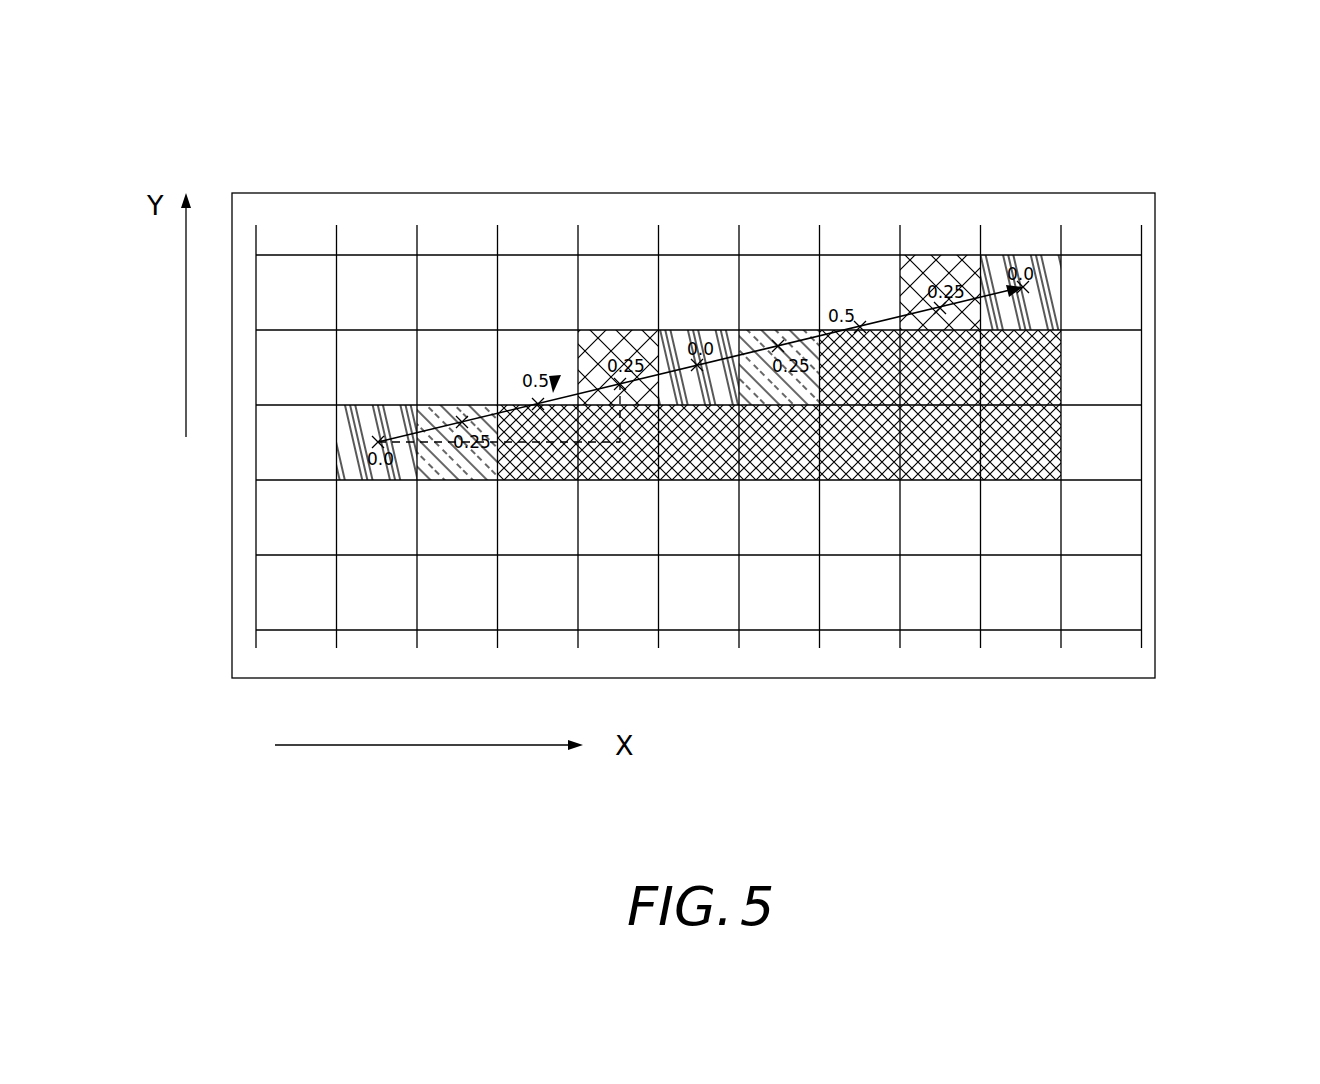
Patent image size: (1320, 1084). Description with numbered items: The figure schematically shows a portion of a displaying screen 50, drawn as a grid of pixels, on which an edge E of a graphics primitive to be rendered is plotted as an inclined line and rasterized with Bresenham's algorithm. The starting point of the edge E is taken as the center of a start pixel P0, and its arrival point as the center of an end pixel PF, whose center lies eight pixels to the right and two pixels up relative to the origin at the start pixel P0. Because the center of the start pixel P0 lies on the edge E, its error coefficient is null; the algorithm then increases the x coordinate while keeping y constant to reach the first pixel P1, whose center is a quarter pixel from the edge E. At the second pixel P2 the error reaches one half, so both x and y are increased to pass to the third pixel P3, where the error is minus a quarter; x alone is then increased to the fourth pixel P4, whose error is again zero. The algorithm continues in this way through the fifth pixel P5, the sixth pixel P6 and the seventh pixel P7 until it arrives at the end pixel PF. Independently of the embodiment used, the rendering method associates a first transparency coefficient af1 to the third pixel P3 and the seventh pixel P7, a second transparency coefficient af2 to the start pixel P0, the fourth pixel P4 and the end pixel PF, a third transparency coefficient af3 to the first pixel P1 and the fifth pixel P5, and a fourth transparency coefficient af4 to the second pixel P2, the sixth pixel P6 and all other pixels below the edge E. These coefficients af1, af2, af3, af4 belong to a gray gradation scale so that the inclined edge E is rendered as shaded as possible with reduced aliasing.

The displaying screen 50 is at (285, 604).
The start pixel P0 is at (355, 421).
The first pixel P1 is at (437, 407).
The second pixel P2 is at (545, 423).
The third pixel P3 is at (645, 350).
The fourth pixel P4 is at (677, 340).
The fifth pixel P5 is at (783, 410).
The sixth pixel P6 is at (883, 353).
The seventh pixel P7 is at (950, 285).
The end pixel PF is at (1050, 273).
The edge E is at (561, 365).
The first transparency coefficient af1 is at (608, 347).
The second transparency coefficient af2 is at (348, 460).
The third transparency coefficient af3 is at (450, 462).
The fourth transparency coefficient af4 is at (1022, 447).